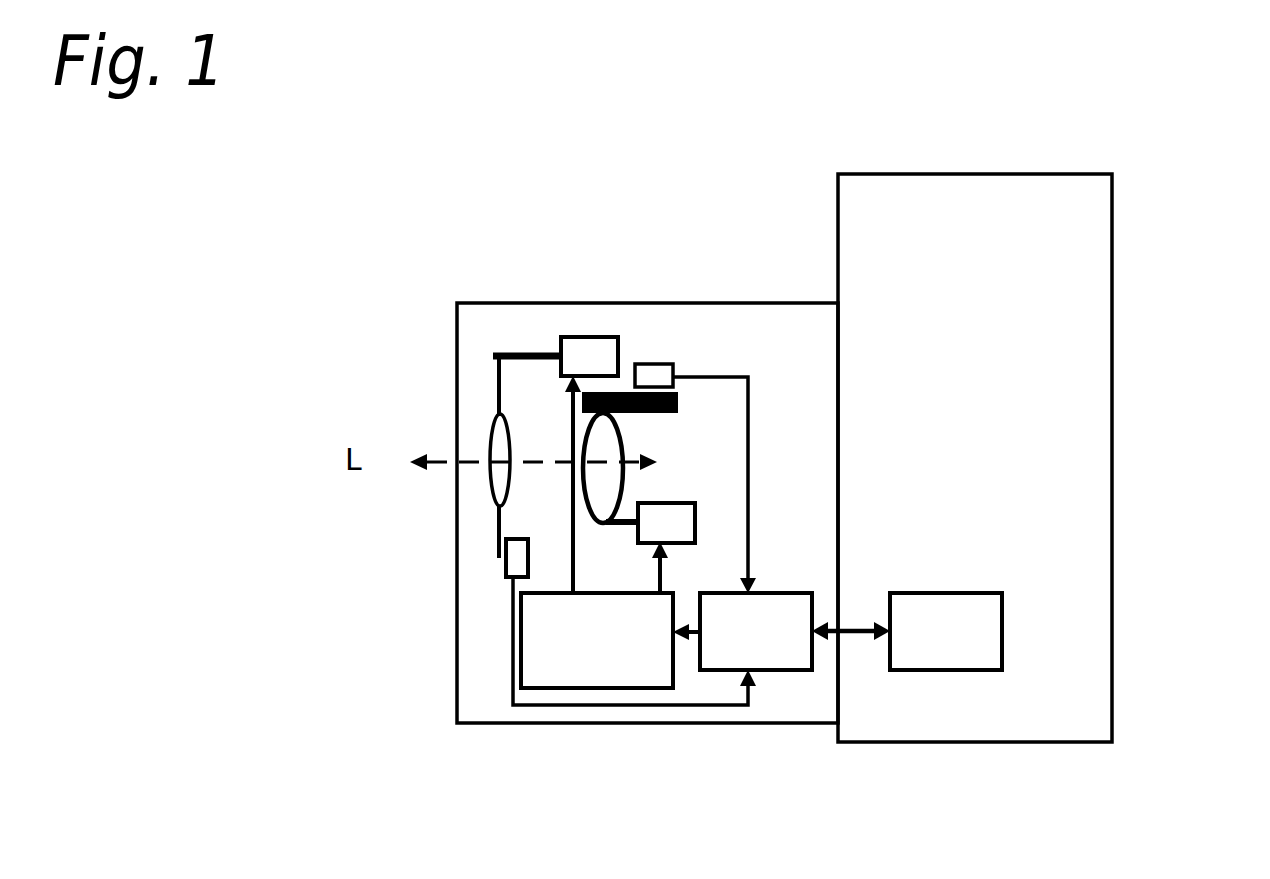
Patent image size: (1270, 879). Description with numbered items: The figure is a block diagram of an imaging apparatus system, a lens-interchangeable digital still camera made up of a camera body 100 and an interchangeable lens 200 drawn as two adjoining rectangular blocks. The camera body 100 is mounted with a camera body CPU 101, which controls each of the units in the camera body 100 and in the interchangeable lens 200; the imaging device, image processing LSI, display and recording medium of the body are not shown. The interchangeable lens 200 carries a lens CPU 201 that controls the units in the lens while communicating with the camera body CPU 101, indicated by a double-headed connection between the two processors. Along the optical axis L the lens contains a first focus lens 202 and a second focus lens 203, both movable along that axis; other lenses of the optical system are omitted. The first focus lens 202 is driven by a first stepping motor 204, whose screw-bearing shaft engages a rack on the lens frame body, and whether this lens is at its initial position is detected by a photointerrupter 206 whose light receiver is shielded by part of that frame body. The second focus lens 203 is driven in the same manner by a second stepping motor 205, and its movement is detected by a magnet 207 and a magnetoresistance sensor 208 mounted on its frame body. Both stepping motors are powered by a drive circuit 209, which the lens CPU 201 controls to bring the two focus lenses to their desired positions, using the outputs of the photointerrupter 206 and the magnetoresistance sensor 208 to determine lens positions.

The camera body 100 is at (930, 768).
The camera body CPU 101 is at (973, 670).
The interchangeable lens 200 is at (558, 752).
The lens CPU 201 is at (778, 670).
The first focus lens 202 is at (493, 428).
The second focus lens 203 is at (627, 485).
The first stepping motor 204 is at (587, 338).
The second stepping motor 205 is at (695, 518).
The photointerrupter 206 is at (505, 563).
The magnet 207 is at (675, 393).
The magnetoresistance sensor 208 is at (653, 365).
The drive circuit 209 is at (535, 688).